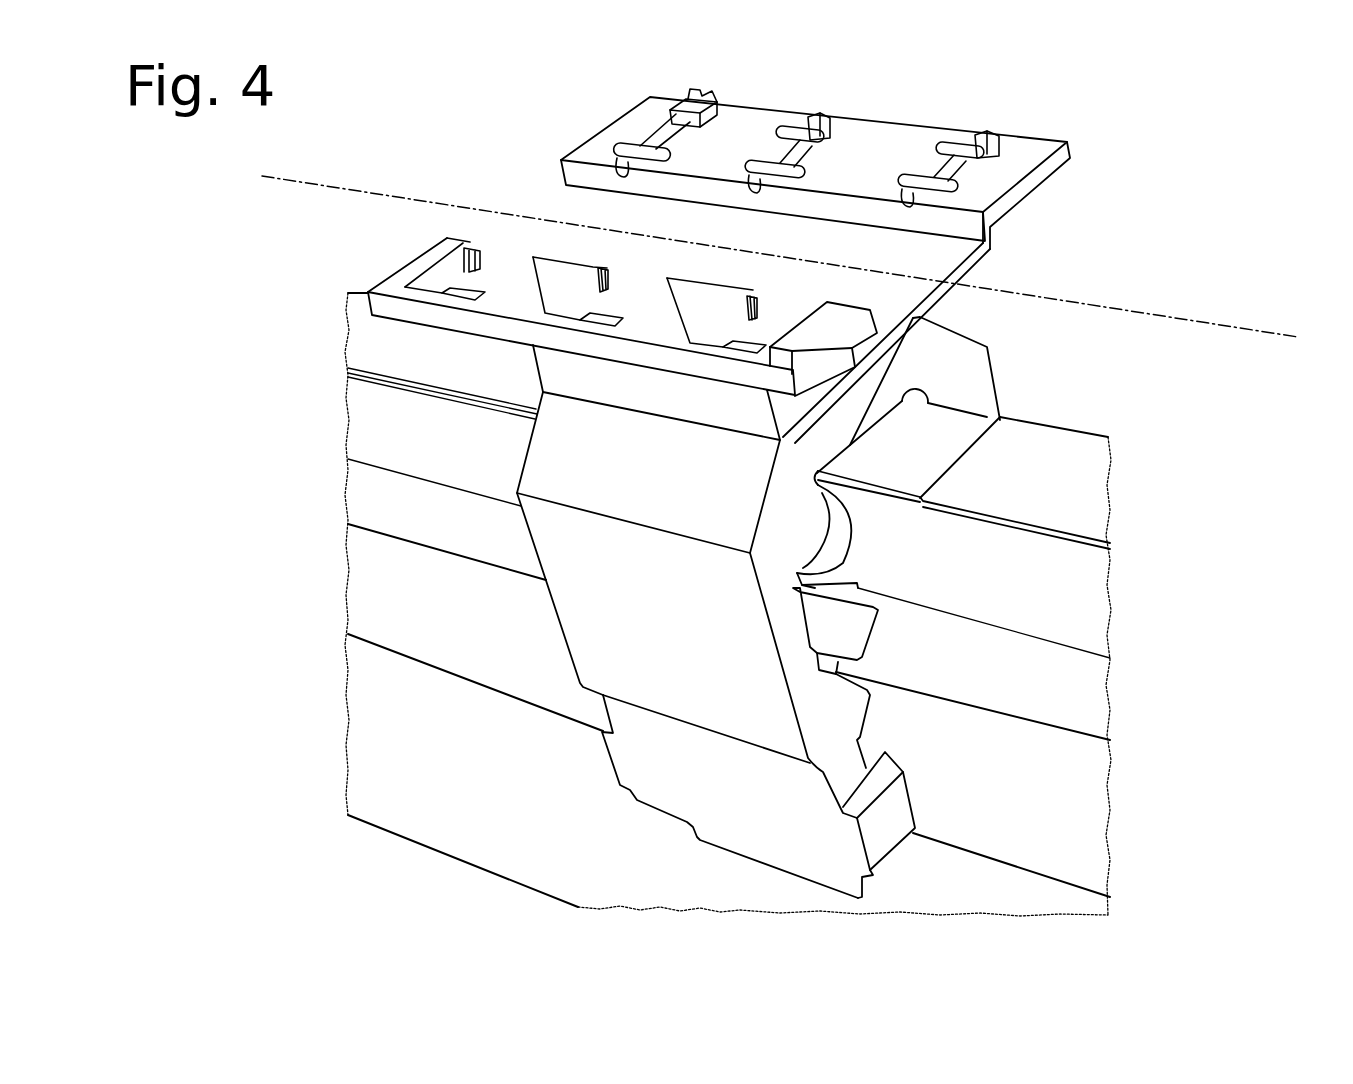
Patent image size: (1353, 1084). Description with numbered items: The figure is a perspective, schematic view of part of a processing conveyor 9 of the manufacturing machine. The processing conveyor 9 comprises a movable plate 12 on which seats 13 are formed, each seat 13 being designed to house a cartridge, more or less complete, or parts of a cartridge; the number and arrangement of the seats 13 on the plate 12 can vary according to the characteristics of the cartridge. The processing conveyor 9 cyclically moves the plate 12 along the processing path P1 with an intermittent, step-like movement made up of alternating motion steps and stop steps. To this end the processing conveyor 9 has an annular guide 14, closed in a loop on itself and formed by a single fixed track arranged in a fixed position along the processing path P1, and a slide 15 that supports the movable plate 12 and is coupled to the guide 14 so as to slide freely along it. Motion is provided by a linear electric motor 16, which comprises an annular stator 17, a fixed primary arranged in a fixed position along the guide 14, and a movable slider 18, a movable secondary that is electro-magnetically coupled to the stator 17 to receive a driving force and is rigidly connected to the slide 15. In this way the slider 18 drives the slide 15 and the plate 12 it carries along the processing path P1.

The processing conveyor 9 is at (208, 498).
The plate 12 is at (938, 258).
The seats 13 is at (985, 158).
The annular guide 14 is at (1040, 470).
The slide 15 is at (615, 615).
The linear electric motor 16 is at (1160, 827).
The annular stator 17 is at (392, 568).
The movable slider 18 is at (657, 773).
The processing path P1 is at (1196, 323).